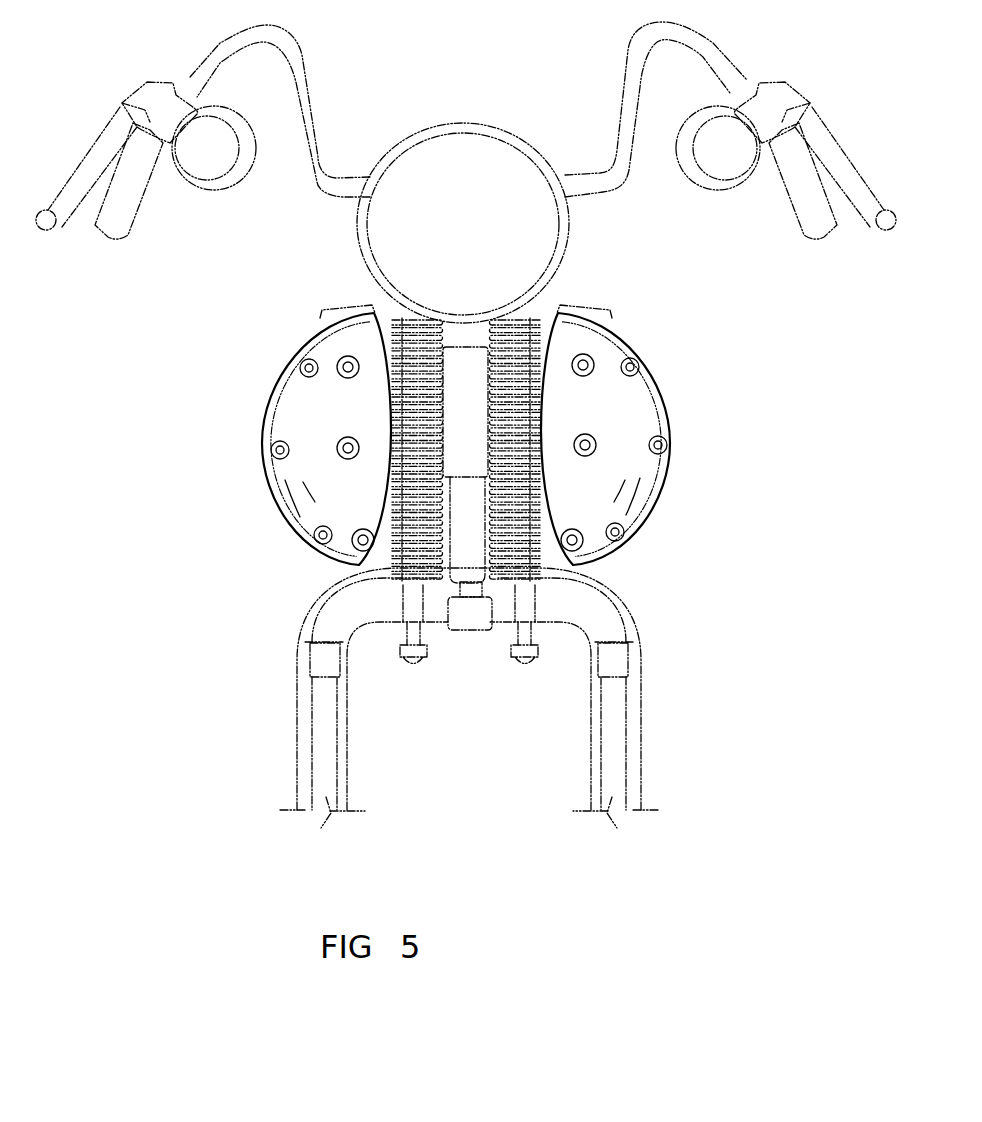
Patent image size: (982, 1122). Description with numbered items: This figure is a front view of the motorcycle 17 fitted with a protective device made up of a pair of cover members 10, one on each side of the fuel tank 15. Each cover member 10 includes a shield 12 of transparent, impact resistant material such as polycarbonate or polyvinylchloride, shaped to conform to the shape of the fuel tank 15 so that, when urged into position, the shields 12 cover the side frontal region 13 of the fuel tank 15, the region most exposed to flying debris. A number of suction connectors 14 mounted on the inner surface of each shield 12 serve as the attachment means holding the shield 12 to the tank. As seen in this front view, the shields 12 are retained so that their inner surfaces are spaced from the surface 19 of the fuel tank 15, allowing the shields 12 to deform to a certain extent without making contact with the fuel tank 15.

The cover member 10 is at (445, 460).
The shield 12 is at (260, 410).
The side frontal region 13 is at (320, 421).
The suction connectors 14 is at (300, 364).
The fuel tank 15 is at (628, 400).
The motorcycle 17 is at (438, 127).
The surface of the fuel tank 19 is at (283, 503).